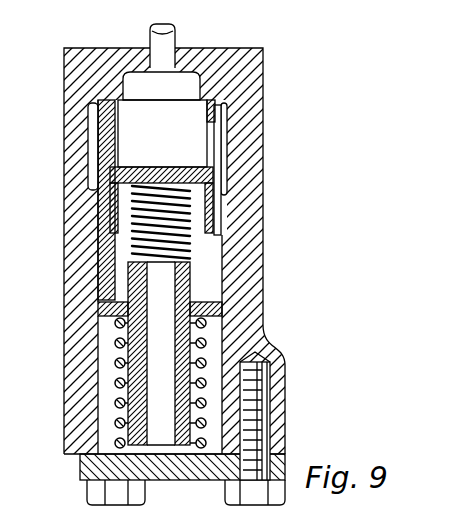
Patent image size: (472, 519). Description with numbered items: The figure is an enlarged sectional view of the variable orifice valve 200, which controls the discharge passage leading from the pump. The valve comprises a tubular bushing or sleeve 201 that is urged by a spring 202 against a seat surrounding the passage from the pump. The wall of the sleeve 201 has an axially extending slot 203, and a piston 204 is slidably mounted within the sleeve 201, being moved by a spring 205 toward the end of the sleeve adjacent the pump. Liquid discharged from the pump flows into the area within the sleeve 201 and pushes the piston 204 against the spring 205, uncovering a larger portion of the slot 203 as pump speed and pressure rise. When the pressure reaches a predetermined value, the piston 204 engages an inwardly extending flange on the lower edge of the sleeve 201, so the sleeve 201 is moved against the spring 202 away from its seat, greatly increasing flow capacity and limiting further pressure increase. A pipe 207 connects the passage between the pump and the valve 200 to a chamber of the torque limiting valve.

The variable orifice valve 200 is at (263, 210).
The tubular bushing or sleeve 201 is at (97, 133).
The spring 202 is at (115, 361).
The axially extending slot 203 is at (213, 143).
The piston 204 is at (118, 212).
The spring 205 is at (132, 248).
The pipe 207 is at (165, 41).